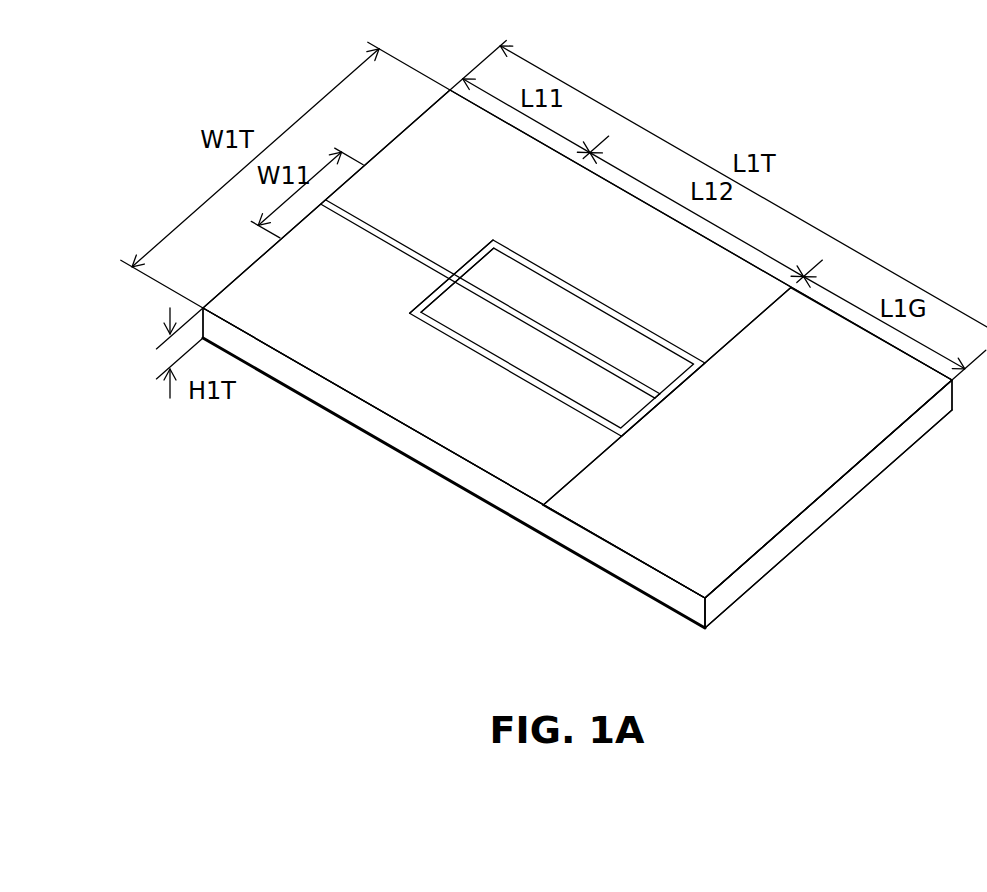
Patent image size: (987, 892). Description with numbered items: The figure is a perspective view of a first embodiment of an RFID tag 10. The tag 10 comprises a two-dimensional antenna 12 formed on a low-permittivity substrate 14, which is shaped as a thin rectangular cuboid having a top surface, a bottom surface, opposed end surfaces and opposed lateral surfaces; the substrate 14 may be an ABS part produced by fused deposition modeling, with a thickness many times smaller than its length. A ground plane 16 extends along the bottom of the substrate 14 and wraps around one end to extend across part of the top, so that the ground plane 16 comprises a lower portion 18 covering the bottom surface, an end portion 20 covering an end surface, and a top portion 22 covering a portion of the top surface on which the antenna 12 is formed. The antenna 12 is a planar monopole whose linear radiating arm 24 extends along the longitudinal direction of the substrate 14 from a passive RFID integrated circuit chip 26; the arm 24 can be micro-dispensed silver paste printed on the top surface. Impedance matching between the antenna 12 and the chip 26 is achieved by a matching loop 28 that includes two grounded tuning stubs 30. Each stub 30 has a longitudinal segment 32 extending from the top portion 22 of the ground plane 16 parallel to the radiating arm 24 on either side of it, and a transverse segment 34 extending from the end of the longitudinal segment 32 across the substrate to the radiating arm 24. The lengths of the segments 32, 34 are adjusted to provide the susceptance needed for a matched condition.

The RFID tag 10 is at (889, 205).
The antenna 12 is at (314, 287).
The substrate 14 is at (405, 444).
The ground plane 16 is at (881, 526).
The lower portion 18 is at (523, 528).
The end portion 20 is at (749, 577).
The top portion 22 is at (877, 423).
The radiating arm 24 is at (355, 216).
The RFID integrated circuit chip 26 is at (661, 385).
The matching loop 28 is at (532, 421).
The tuning stub 30 is at (600, 293).
The longitudinal segment 32 is at (531, 262).
The transverse segment 34 is at (480, 250).